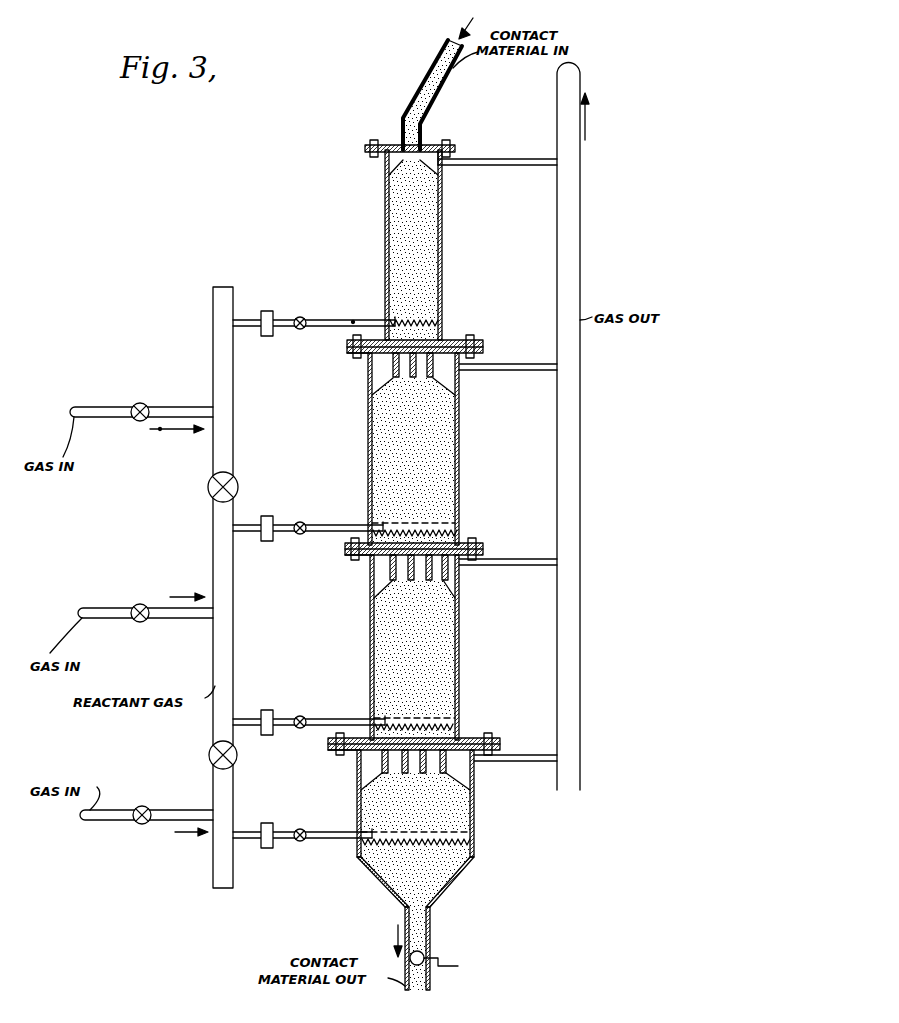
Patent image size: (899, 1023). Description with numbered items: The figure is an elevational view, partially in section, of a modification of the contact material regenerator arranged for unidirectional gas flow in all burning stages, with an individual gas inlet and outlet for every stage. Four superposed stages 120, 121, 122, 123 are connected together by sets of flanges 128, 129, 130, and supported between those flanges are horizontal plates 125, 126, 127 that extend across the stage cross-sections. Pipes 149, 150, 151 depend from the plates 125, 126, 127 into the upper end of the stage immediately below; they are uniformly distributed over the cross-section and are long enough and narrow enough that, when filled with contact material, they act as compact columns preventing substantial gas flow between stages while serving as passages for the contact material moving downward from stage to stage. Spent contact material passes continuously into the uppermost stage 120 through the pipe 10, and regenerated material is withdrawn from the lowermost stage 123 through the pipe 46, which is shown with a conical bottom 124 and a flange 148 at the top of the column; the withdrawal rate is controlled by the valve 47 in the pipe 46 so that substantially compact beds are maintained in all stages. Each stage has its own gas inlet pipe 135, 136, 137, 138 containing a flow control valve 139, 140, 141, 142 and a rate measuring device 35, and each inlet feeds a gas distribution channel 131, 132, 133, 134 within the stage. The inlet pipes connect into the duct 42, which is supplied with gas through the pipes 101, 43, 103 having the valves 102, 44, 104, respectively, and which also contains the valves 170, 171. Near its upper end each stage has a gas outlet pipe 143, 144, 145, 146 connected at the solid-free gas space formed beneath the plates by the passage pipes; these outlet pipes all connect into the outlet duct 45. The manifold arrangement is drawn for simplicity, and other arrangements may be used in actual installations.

The pipe 10 is at (428, 75).
The rate measuring device 35 is at (267, 311).
The duct 42 is at (213, 345).
The pipe 43 is at (102, 620).
The valve 44 is at (143, 603).
The outlet duct 45 is at (583, 254).
The pipe 46 is at (432, 927).
The valve 47 is at (428, 952).
The pipe 101 is at (105, 418).
The valve 102 is at (133, 404).
The pipe 103 is at (108, 822).
The valve 104 is at (152, 794).
The stage 120 is at (385, 216).
The stage 121 is at (368, 430).
The stage 122 is at (370, 640).
The stage 123 is at (474, 815).
The conical bottom 124 is at (390, 886).
The plate 125 is at (460, 345).
The plate 126 is at (368, 575).
The plate 127 is at (358, 755).
The flanges 128 is at (354, 357).
The flanges 129 is at (478, 546).
The flanges 130 is at (490, 738).
The gas distribution channel 131 is at (432, 325).
The gas distribution channel 132 is at (452, 529).
The gas distribution channel 133 is at (450, 726).
The gas distribution channel 134 is at (466, 841).
The gas inlet pipe 135 is at (325, 320).
The gas inlet pipe 136 is at (330, 515).
The gas inlet pipe 137 is at (330, 709).
The gas inlet pipe 138 is at (328, 823).
The flow control valve 139 is at (299, 332).
The flow control valve 140 is at (299, 537).
The flow control valve 141 is at (299, 731).
The flow control valve 142 is at (299, 844).
The gas outlet pipe 143 is at (530, 147).
The gas outlet pipe 144 is at (532, 358).
The gas outlet pipe 145 is at (535, 560).
The gas outlet pipe 146 is at (540, 752).
The top flange 148 is at (383, 144).
The pipes 149 is at (395, 372).
The pipes 150 is at (442, 580).
The pipes 151 is at (380, 770).
The valve 170 is at (208, 490).
The valve 171 is at (209, 752).